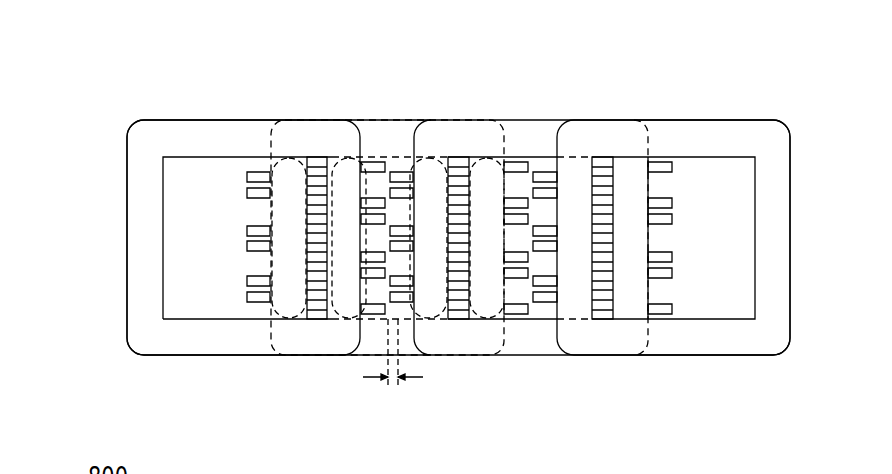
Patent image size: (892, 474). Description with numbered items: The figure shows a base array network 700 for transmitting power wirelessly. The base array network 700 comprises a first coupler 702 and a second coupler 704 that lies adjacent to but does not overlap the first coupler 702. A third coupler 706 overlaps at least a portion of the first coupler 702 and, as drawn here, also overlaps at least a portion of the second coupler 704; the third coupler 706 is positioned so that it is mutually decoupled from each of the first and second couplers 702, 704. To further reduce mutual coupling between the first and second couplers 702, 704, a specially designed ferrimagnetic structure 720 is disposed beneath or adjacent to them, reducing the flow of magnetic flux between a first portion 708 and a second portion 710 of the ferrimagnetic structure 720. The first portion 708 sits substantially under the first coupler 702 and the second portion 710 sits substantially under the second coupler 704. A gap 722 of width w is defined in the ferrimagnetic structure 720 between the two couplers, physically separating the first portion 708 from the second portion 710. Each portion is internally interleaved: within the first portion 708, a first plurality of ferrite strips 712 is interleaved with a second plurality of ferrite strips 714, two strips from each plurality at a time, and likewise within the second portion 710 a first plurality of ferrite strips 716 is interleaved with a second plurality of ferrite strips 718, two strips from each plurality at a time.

The base array network 700 is at (165, 55).
The first coupler 702 is at (203, 143).
The second coupler 704 is at (530, 143).
The third coupler 706 is at (388, 143).
The first portion 708 is at (279, 214).
The second portion 710 is at (473, 214).
The first plurality of ferrite strips 712 is at (293, 322).
The second plurality of ferrite strips 714 is at (352, 322).
The first plurality of ferrite strips 716 is at (427, 322).
The second plurality of ferrite strips 718 is at (480, 322).
The ferrimagnetic structure 720 is at (235, 172).
The gap 722 is at (373, 375).